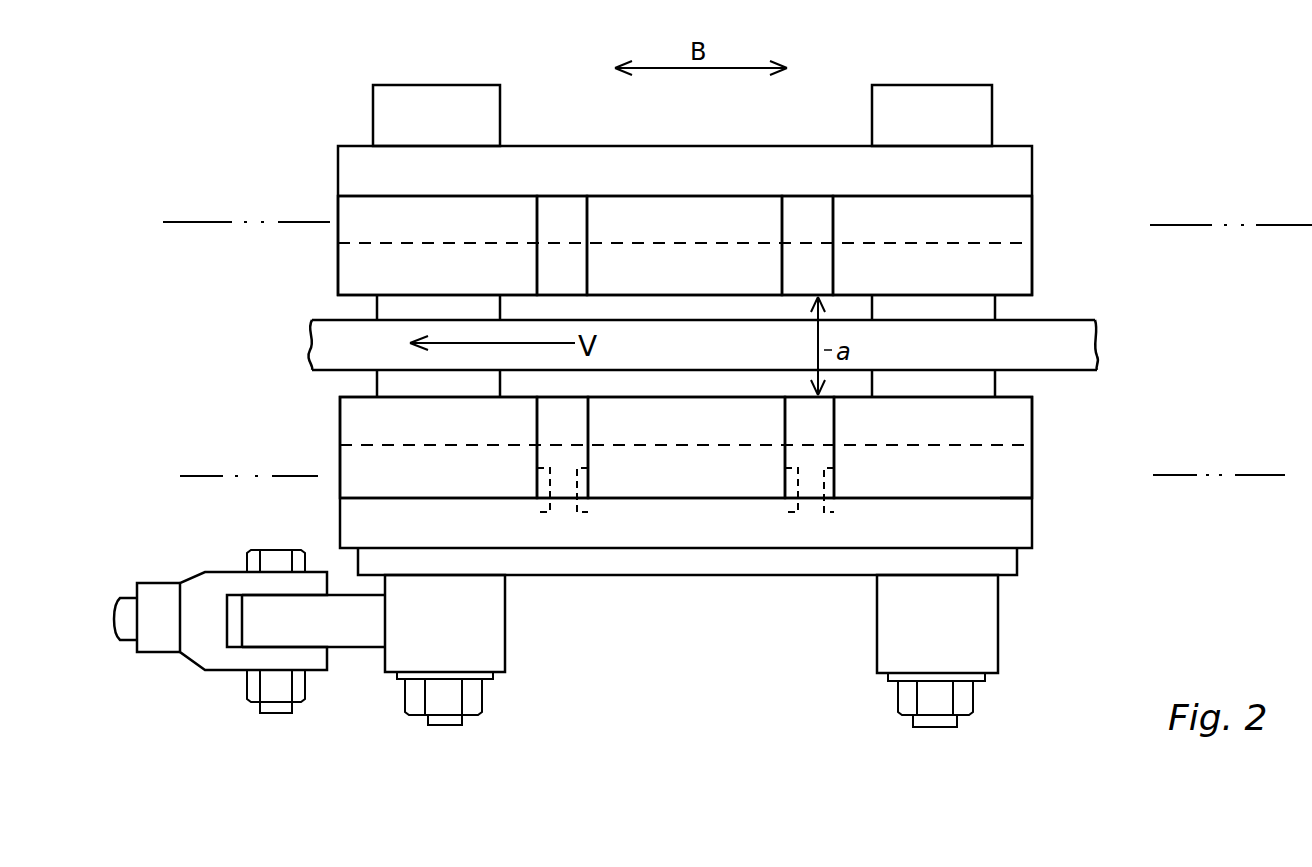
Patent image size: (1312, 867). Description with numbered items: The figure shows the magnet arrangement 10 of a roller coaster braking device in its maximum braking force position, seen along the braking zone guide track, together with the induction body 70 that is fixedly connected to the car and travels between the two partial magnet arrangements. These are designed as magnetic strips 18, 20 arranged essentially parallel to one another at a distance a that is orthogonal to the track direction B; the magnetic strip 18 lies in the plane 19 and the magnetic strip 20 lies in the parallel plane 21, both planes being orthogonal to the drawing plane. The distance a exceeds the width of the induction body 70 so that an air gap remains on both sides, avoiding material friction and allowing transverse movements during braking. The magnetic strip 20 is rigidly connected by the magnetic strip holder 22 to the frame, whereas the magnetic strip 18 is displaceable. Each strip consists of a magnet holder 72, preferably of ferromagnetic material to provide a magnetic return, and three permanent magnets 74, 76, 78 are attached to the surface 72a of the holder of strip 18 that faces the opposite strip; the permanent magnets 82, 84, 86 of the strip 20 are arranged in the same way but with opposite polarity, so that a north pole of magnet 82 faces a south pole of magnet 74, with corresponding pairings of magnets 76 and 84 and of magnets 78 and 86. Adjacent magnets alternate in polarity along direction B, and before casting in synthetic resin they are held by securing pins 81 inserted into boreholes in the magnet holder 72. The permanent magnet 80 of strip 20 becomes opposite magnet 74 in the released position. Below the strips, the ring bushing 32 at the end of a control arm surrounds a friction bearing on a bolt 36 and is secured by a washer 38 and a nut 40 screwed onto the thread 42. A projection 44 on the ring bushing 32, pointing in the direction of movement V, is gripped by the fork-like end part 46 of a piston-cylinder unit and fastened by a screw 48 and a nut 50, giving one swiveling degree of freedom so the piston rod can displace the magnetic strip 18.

The magnet arrangement 10 is at (1152, 125).
The magnetic strip 18 is at (1046, 497).
The plane 19 is at (197, 476).
The magnetic strip 20 is at (1040, 198).
The plane 21 is at (190, 221).
The magnetic strip holder 22 is at (457, 110).
The ring bushing 32 is at (475, 630).
The bolt 36 is at (510, 567).
The washer 38 is at (493, 679).
The nut 40 is at (470, 700).
The thread 42 is at (428, 725).
The projection 44 is at (340, 637).
The end part 46 is at (203, 686).
The screw 48 is at (267, 560).
The nut 50 is at (305, 688).
The induction body 70 is at (1055, 350).
The magnet holder 72 is at (775, 176).
The surface 72a is at (1010, 497).
The permanent magnet 74 is at (340, 419).
The permanent magnet 76 is at (626, 439).
The permanent magnet 78 is at (880, 439).
The permanent magnet 80 is at (567, 259).
The securing pin 81 is at (543, 512).
The permanent magnet 82 is at (378, 237).
The permanent magnet 84 is at (623, 234).
The permanent magnet 86 is at (869, 237).